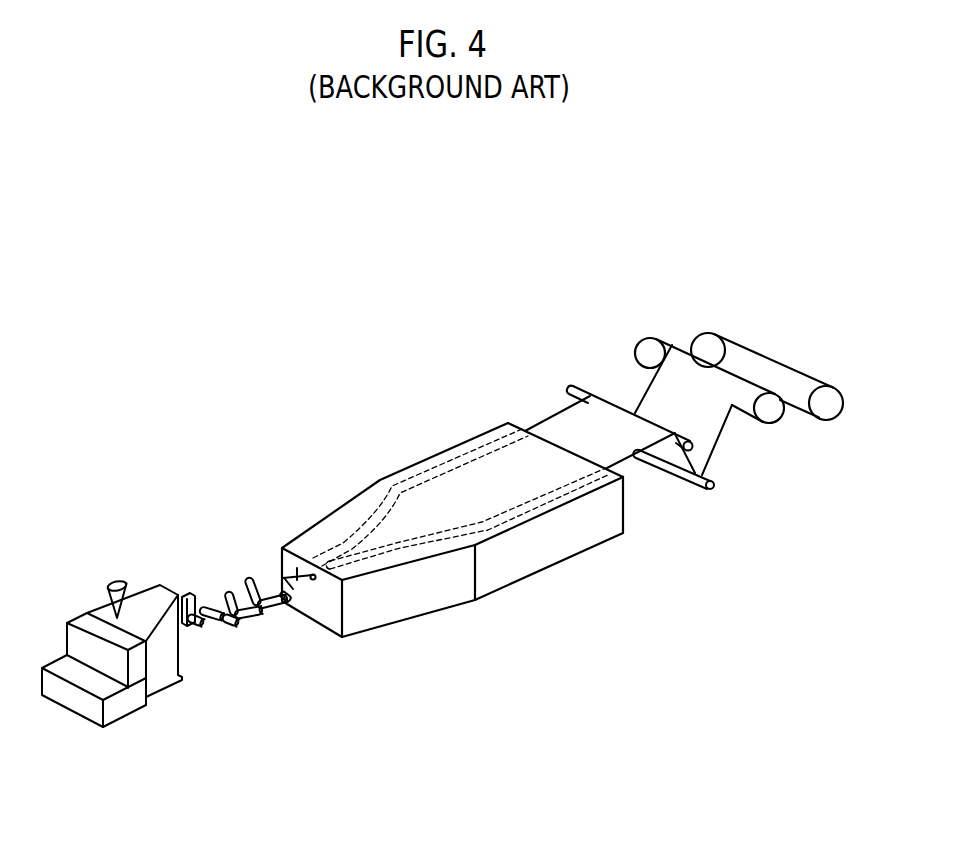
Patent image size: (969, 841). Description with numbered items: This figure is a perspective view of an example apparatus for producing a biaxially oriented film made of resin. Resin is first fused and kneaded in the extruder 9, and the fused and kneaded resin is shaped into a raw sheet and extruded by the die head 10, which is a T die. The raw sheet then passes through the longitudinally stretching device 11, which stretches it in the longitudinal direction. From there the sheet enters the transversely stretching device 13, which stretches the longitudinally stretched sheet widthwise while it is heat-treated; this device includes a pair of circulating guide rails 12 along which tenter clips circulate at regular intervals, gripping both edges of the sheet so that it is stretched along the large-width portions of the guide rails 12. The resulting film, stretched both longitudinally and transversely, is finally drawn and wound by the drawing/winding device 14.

The extruder 9 is at (138, 588).
The die head 10 is at (205, 595).
The longitudinally stretching device 11 is at (250, 568).
The guide rails 12 is at (415, 477).
The transversely stretching device 13 is at (485, 418).
The drawing/winding device 14 is at (686, 326).